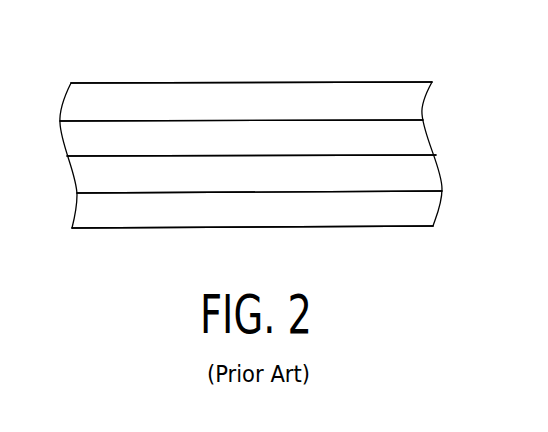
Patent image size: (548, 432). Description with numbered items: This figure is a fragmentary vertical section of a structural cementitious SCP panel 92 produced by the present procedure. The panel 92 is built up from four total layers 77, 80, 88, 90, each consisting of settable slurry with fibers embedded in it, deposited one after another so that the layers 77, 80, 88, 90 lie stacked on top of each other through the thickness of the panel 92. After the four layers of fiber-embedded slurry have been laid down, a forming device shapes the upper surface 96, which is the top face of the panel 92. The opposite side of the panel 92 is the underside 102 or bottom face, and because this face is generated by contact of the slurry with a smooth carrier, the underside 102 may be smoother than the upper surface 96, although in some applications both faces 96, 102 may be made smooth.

The SCP panel 92 is at (386, 50).
The upper surface 96 is at (137, 82).
The layer 90 is at (413, 101).
The layer 88 is at (413, 139).
The layer 80 is at (422, 176).
The layer 77 is at (423, 212).
The underside 102 is at (412, 227).